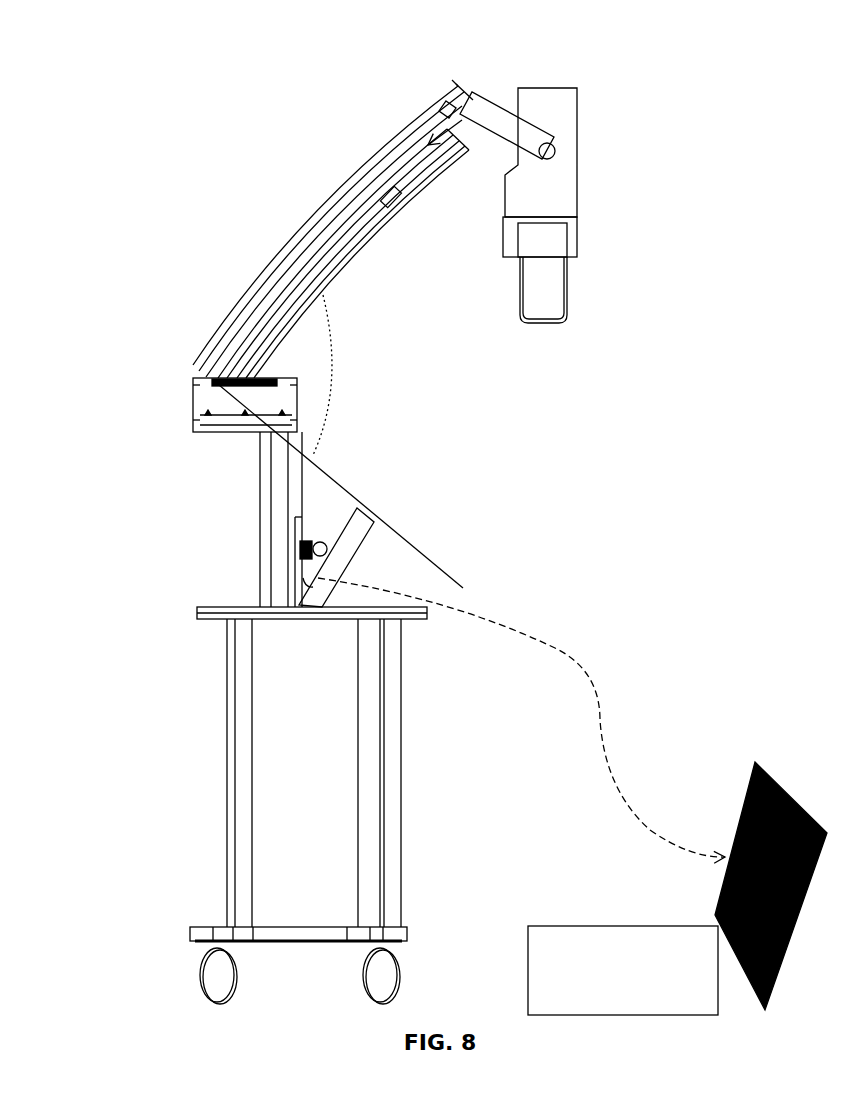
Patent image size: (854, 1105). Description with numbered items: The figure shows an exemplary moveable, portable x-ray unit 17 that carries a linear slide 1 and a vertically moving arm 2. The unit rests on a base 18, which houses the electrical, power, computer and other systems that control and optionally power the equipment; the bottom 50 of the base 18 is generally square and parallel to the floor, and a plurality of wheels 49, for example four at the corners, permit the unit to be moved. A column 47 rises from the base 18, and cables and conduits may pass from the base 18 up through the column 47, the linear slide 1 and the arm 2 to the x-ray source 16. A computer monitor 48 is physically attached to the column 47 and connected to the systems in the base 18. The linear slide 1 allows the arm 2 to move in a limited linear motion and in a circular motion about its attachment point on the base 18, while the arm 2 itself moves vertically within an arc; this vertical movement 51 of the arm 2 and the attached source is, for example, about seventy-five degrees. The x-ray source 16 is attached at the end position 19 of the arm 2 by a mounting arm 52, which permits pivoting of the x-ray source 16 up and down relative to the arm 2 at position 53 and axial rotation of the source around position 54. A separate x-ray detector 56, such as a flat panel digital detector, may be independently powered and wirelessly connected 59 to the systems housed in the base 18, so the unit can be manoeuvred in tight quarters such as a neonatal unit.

The linear slide apparatus 1 is at (257, 378).
The arm 2 is at (374, 220).
The x-ray source 16 is at (585, 224).
The x-ray unit 17 is at (197, 63).
The base 18 is at (407, 1008).
The position 19 is at (463, 82).
The column 47 is at (248, 518).
The computer monitor 48 is at (345, 547).
The wheels 49 is at (367, 975).
The bottom 50 is at (406, 929).
The vertical movement 51 is at (332, 404).
The mounting arm 52 is at (565, 115).
The position 53 is at (447, 108).
The position 54 is at (556, 145).
The x-ray detector 56 is at (769, 760).
The wireless connection 59 is at (599, 695).